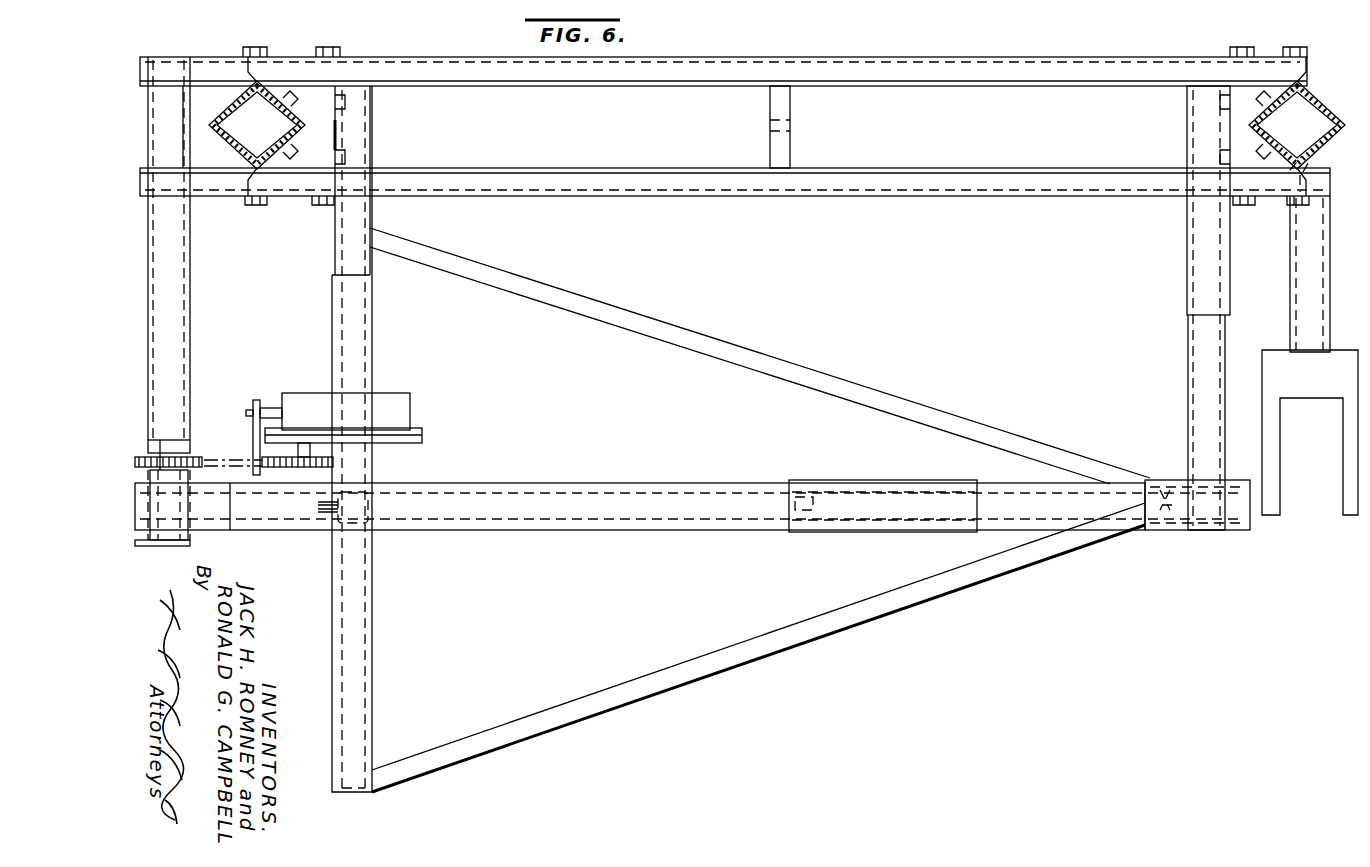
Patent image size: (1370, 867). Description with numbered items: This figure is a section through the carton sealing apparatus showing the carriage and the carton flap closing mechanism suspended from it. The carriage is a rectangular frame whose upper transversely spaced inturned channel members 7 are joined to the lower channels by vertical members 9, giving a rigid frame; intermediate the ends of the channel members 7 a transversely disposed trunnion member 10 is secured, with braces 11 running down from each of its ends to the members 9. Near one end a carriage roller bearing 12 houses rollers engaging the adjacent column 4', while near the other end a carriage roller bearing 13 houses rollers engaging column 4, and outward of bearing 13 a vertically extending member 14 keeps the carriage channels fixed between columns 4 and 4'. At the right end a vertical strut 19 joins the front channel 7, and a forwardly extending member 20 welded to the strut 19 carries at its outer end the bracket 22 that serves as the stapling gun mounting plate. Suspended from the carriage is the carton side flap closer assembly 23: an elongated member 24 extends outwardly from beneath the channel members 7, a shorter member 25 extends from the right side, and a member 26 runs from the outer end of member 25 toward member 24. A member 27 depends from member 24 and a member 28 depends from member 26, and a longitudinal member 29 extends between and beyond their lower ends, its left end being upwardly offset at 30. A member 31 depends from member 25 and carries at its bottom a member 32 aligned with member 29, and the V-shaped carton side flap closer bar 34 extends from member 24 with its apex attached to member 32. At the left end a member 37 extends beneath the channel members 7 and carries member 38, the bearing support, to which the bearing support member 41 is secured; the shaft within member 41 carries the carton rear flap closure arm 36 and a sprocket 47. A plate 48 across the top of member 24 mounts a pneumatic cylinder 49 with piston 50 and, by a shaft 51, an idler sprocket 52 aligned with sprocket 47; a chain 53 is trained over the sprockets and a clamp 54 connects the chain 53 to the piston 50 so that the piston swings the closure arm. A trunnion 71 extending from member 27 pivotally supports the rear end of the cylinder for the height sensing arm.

The column 4 is at (251, 107).
The column 4' is at (1297, 126).
The upper channel members 7 is at (884, 52).
The vertical members 9 is at (329, 150).
The trunnion member 10 is at (770, 145).
The braces 11 is at (502, 86).
The carriage roller bearing 12 is at (1248, 90).
The carriage roller bearing 13 is at (303, 90).
The vertically extending member 14 is at (199, 174).
The vertical strut 19 is at (1311, 170).
The forwardly extending member 20 is at (1297, 280).
The bracket 22 is at (1325, 388).
The carton side flap closer assembly 23 is at (813, 318).
The elongated member 24 is at (334, 242).
The shorter member 25 is at (1196, 363).
The member 26 is at (886, 484).
The member 27 is at (368, 503).
The member 28 is at (795, 500).
The member 29 is at (606, 518).
The upwardly offset portion 30 is at (222, 519).
The member 31 is at (1194, 526).
The member 32 is at (1236, 530).
The V-shaped carton side flap closer bar 34 is at (902, 391).
The carton rear flap closure arm 36 is at (190, 544).
The member 37 is at (192, 294).
The member 38 is at (164, 446).
The bearing support member 41 is at (186, 502).
The sprocket 47 is at (175, 453).
The plate 48 is at (422, 437).
The pneumatic cylinder 49 is at (385, 398).
The piston 50 is at (275, 407).
The shaft 51 is at (361, 453).
The idler sprocket 52 is at (293, 468).
The chain 53 is at (220, 455).
The clamp 54 is at (256, 400).
The trunnion 71 is at (320, 516).